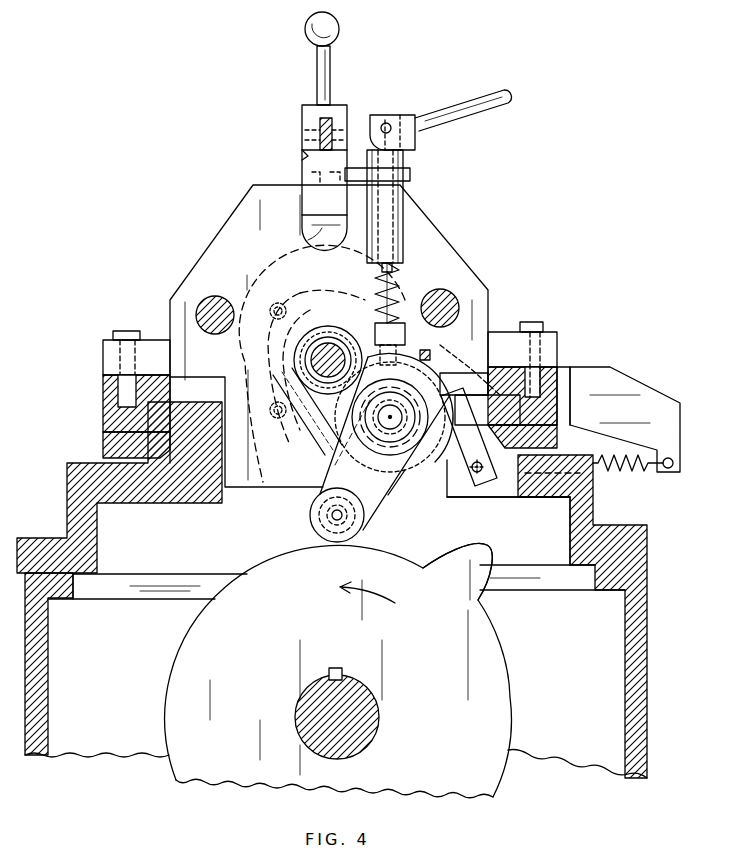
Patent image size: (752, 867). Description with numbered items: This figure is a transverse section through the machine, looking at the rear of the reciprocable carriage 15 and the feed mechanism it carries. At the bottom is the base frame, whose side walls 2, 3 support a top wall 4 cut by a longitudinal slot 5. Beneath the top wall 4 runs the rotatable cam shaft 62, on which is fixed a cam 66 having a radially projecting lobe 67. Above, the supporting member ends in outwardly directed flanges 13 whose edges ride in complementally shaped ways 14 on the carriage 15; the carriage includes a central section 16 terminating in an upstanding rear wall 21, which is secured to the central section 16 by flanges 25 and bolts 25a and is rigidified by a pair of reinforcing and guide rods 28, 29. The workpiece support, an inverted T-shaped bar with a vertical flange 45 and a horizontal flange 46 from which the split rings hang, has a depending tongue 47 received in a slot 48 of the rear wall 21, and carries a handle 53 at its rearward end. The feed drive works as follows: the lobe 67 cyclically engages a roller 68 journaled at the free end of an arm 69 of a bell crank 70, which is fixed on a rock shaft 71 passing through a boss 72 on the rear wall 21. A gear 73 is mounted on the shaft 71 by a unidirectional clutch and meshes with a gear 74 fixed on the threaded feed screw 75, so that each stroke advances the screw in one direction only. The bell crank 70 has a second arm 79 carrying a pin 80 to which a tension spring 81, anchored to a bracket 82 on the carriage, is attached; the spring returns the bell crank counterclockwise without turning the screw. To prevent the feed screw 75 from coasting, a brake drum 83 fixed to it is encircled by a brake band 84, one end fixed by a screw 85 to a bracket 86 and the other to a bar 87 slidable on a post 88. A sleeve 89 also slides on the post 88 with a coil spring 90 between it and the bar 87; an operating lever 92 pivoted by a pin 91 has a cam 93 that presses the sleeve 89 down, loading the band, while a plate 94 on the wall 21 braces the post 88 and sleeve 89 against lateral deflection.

The side wall 2 is at (648, 683).
The side wall 3 is at (48, 690).
The top wall 4 is at (73, 603).
The longitudinal slot 5 is at (73, 586).
The outwardly directed flanges 13 is at (512, 419).
The ways 14 is at (555, 438).
The reciprocable carriage 15 is at (509, 282).
The central section 16 is at (103, 372).
The upstanding wall 21 is at (447, 250).
The flanges 25 is at (153, 338).
The bolts 25a is at (112, 330).
The reinforcing and guide rod 28 is at (200, 303).
The reinforcing and guide rod 29 is at (452, 297).
The vertical flange 45 is at (333, 130).
The horizontal flange 46 is at (305, 163).
The depending tongue 47 is at (302, 205).
The slot 48 is at (312, 246).
The handle 53 is at (340, 22).
The cam shaft 62 is at (378, 712).
The cam 66 is at (505, 718).
The lobe 67 is at (487, 555).
The roller 68 is at (363, 520).
The arm 69 is at (322, 480).
The bell crank 70 is at (390, 508).
The rock shaft 71 is at (372, 417).
The boss 72 is at (305, 446).
The gear 73 is at (445, 362).
The gear 74 is at (322, 322).
The threaded feed screw 75 is at (290, 400).
The second arm 79 is at (478, 475).
The pin 80 is at (490, 490).
The tension spring 81 is at (626, 458).
The bracket 82 is at (650, 395).
The brake drum 83 is at (265, 352).
The brake band 84 is at (290, 343).
The screw 85 is at (412, 352).
The bracket 86 is at (450, 380).
The bar 87 is at (395, 312).
The post 88 is at (400, 272).
The sleeve 89 is at (403, 215).
The coil spring 90 is at (380, 270).
The pin 91 is at (388, 123).
The operating lever 92 is at (455, 112).
The cam 93 is at (408, 148).
The plate 94 is at (411, 175).